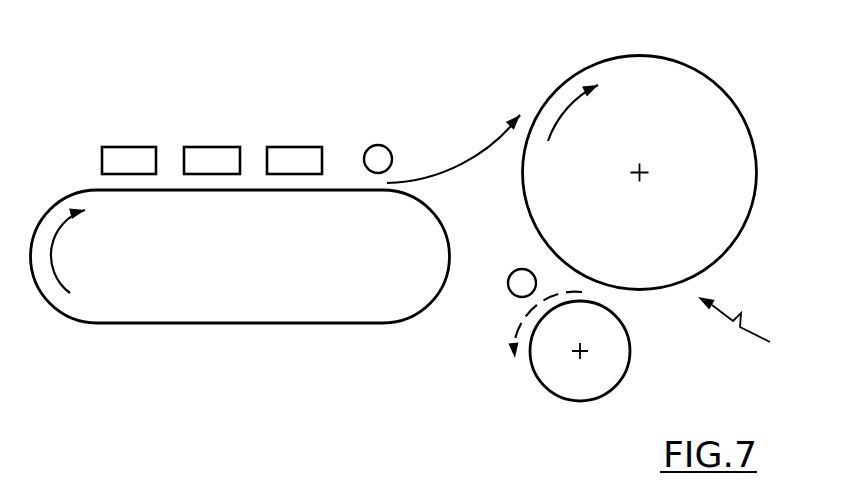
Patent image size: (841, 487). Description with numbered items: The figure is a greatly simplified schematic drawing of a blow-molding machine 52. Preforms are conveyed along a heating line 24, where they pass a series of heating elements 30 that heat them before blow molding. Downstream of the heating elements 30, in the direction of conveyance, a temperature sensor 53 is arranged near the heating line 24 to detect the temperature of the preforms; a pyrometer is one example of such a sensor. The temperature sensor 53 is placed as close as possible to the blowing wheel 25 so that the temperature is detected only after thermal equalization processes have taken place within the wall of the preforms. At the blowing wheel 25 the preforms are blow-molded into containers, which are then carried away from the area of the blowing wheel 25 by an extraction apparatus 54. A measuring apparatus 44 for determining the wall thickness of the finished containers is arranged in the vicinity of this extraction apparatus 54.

The heating line 24 is at (200, 318).
The blowing wheel 25 is at (692, 90).
The heating elements 30 is at (123, 153).
The measuring apparatus 44 is at (517, 292).
The blow-molding machine 52 is at (753, 336).
The temperature sensor 53 is at (381, 148).
The extraction apparatus 54 is at (565, 378).